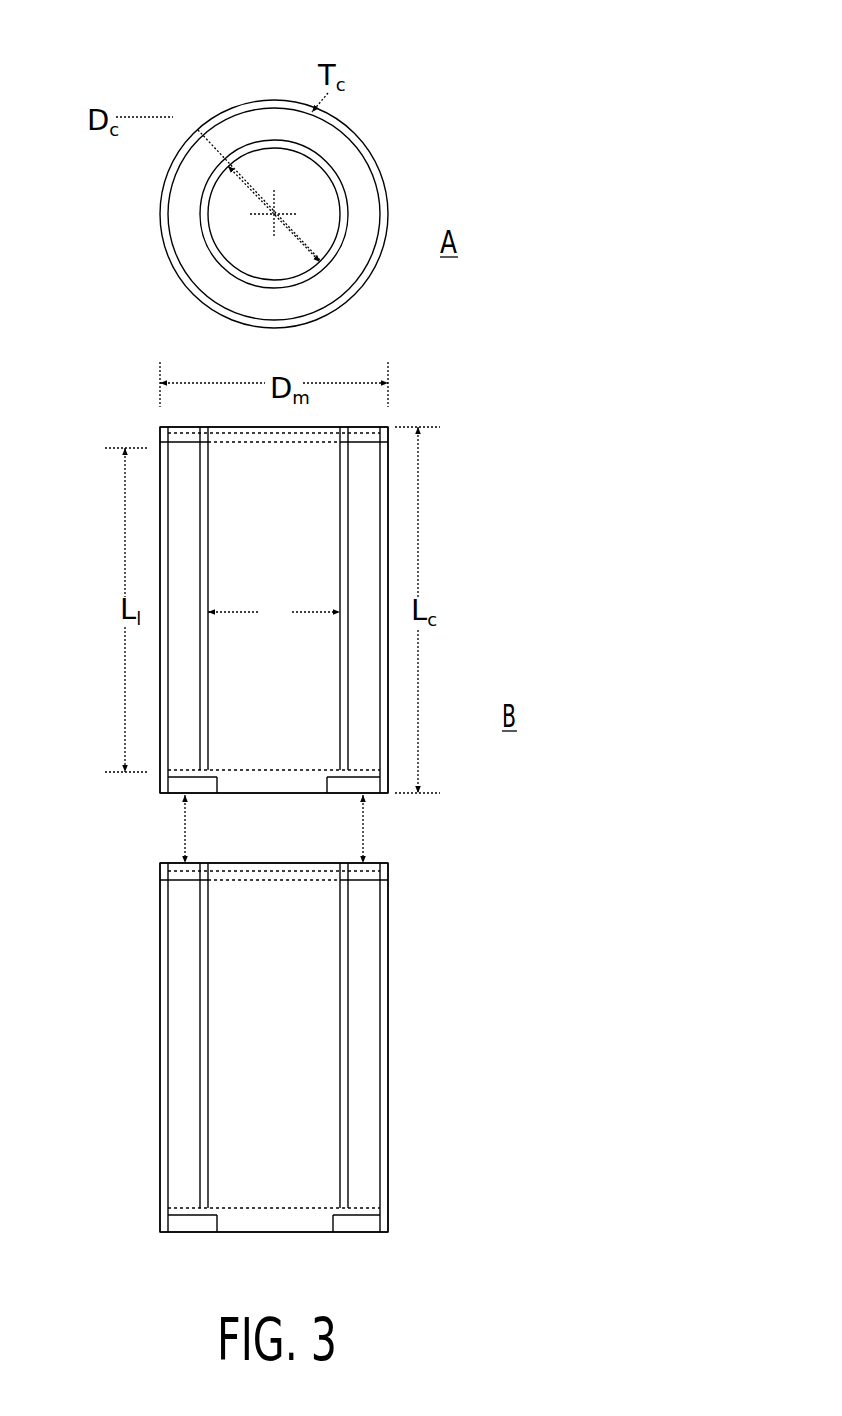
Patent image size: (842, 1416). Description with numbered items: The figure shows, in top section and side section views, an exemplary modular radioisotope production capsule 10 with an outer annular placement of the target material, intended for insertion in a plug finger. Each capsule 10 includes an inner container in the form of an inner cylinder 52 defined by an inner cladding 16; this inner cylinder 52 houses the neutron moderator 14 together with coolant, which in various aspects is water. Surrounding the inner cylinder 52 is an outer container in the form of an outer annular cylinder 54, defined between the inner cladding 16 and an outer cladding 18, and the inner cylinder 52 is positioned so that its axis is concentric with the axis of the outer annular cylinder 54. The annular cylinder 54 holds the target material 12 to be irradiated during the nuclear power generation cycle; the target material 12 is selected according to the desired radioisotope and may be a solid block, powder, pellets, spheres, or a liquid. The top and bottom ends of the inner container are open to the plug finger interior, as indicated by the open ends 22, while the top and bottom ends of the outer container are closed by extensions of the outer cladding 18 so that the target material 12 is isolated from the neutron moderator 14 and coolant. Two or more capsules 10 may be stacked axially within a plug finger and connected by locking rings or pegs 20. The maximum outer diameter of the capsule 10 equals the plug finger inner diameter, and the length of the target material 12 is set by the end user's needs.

The modular radioisotope capsule 10 is at (446, 66).
The target material 12 is at (362, 242).
The neutron moderator 14 is at (240, 228).
The inner cladding 16 is at (262, 143).
The outer cladding 18 is at (274, 101).
The locking rings or pegs 20 is at (172, 796).
The open ends 22 is at (233, 426).
The inner cylinder 52 is at (308, 157).
The outer annular cylinder 54 is at (378, 173).